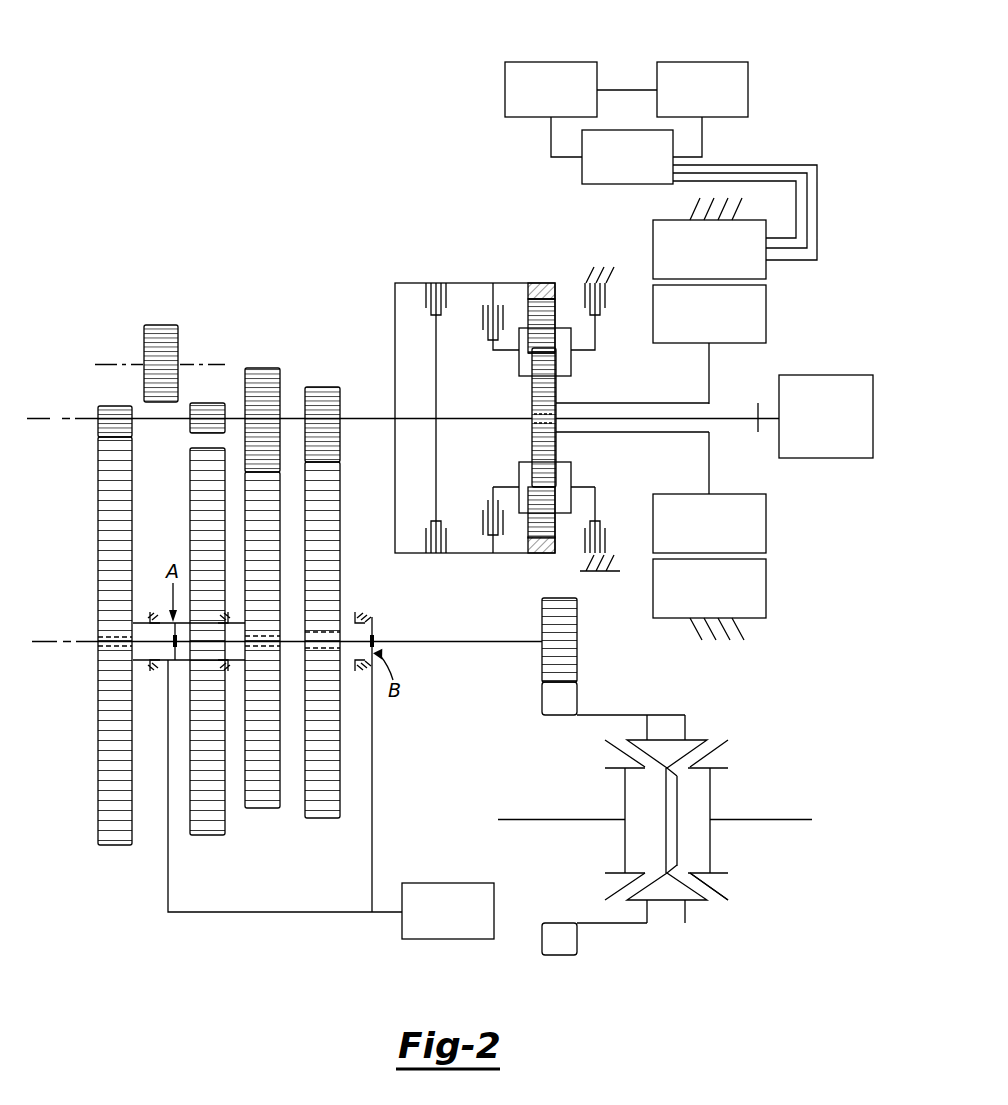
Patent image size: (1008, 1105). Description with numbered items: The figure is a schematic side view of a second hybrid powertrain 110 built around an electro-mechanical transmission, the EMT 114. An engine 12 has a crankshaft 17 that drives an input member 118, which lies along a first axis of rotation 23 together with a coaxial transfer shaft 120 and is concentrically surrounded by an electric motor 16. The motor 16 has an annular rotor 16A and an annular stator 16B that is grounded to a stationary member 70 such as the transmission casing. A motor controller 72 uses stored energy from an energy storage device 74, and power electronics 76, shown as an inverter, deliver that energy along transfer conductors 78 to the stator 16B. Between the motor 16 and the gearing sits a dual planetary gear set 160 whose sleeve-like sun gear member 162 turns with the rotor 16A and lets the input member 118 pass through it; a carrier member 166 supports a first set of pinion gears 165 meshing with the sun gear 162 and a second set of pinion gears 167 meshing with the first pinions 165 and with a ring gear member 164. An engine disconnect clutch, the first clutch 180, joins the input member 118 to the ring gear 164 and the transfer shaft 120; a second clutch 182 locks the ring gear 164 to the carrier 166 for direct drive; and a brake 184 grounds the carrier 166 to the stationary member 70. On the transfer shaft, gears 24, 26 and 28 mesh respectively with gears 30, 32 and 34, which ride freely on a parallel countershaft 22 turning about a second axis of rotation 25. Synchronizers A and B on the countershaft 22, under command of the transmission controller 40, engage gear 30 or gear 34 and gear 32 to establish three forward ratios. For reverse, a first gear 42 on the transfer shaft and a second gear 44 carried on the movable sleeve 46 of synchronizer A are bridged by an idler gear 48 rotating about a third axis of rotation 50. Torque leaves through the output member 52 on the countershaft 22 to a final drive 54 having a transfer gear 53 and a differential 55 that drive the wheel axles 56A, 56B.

The engine 12 is at (828, 375).
The electric motor 16 is at (792, 298).
The rotor 16A is at (738, 331).
The stator 16B is at (720, 266).
The crankshaft 17 is at (768, 422).
The countershaft 22 is at (437, 644).
The first axis of rotation 23 is at (43, 416).
The gear 24 is at (98, 398).
The second axis of rotation 25 is at (53, 639).
The gear 26 is at (322, 387).
The gear 28 is at (262, 368).
The gear 30 is at (98, 486).
The gear 32 is at (340, 502).
The gear 34 is at (280, 520).
The transmission controller 40 is at (447, 883).
The first gear 42 is at (205, 403).
The second gear 44 is at (190, 524).
The movable sleeve 46 is at (164, 663).
The idler gear 48 is at (144, 339).
The third axis of rotation 50 is at (110, 364).
The output member 52 is at (577, 654).
The transfer gear 53 is at (542, 702).
The final drive 54 is at (736, 709).
The differential 55 is at (710, 900).
The wheel axle 56A is at (540, 818).
The wheel axle 56B is at (775, 818).
The stationary member 70 is at (597, 270).
The motor controller 72 is at (703, 62).
The energy storage device 74 is at (551, 62).
The power electronics 76 is at (582, 177).
The transfer conductors 78 is at (787, 165).
The powertrain 110 is at (842, 240).
The electro-mechanical transmission 114 is at (840, 108).
The input member 118 is at (735, 416).
The transfer shaft 120 is at (358, 418).
The planetary gear set 160 is at (518, 439).
The sun gear member 162 is at (531, 418).
The ring gear member 164 is at (556, 280).
The first set of pinion gears 165 is at (556, 391).
The carrier member 166 is at (519, 372).
The second set of pinion gears 167 is at (528, 291).
The first clutch 180 is at (424, 318).
The second clutch 182 is at (469, 323).
The brake 184 is at (606, 314).